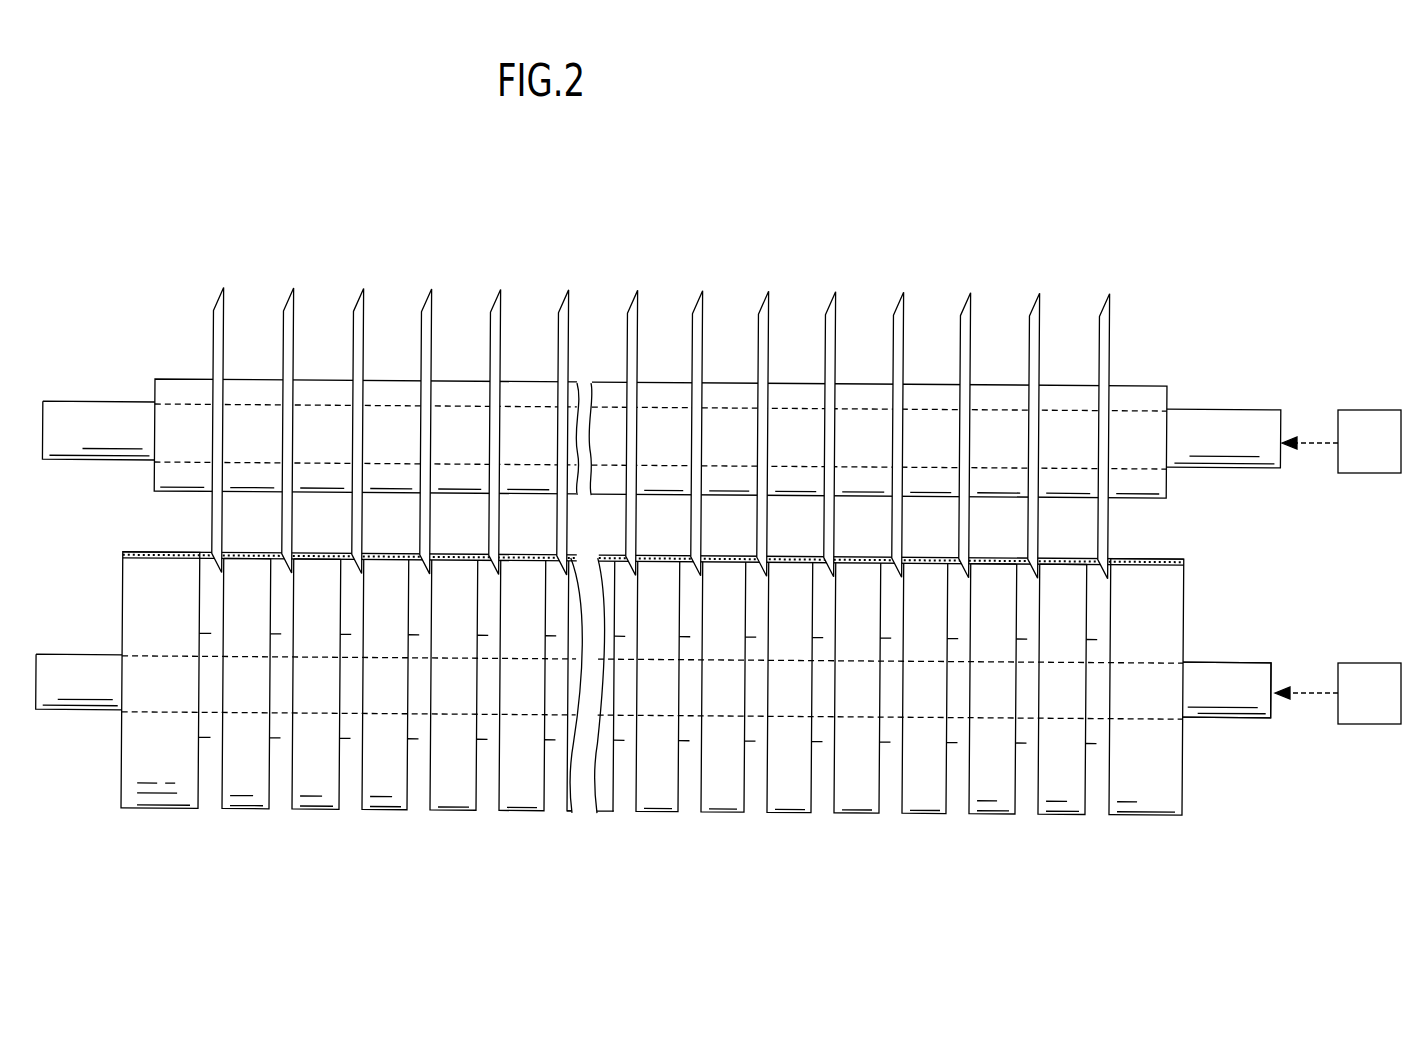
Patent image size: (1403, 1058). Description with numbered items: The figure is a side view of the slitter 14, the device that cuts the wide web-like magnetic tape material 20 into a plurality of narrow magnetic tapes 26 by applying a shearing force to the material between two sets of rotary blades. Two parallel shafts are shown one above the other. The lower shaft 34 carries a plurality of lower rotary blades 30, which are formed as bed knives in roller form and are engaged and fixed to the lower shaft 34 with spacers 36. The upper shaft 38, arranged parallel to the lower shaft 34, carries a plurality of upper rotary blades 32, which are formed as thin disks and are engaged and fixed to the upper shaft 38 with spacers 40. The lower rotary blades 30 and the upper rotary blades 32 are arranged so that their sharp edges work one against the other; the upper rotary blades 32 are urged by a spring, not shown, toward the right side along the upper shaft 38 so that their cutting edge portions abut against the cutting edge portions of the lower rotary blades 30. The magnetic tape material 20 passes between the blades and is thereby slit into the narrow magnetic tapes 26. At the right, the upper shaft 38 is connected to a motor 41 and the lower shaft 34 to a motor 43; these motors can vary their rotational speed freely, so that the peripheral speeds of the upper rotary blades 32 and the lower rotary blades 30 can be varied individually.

The slitter 14 is at (683, 205).
The magnetic tape material 20 is at (1132, 567).
The narrow magnetic tapes 26 is at (268, 555).
The lower rotary blades 30 is at (255, 811).
The upper rotary blades 32 is at (226, 318).
The lower shaft 34 is at (1203, 708).
The spacers 36 is at (965, 740).
The upper shaft 38 is at (1209, 404).
The spacers 40 is at (939, 379).
The motor 41 is at (1365, 409).
The motor 43 is at (1373, 662).